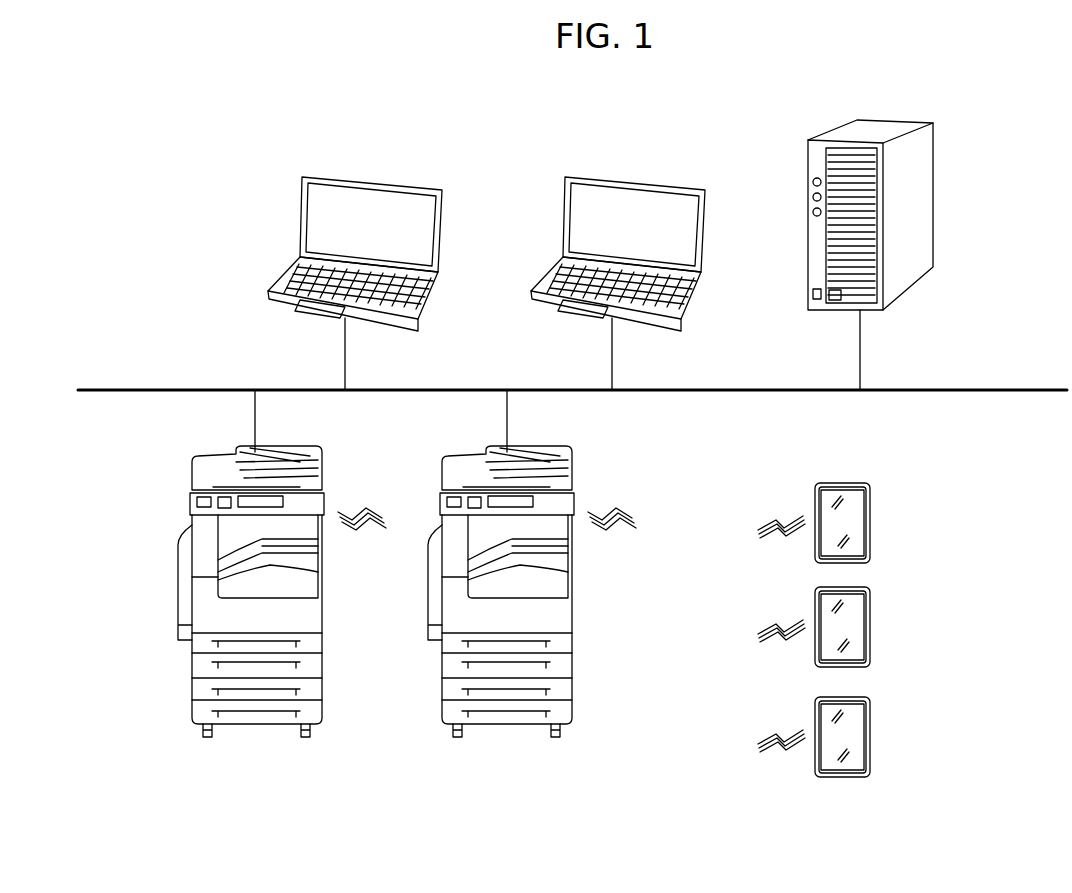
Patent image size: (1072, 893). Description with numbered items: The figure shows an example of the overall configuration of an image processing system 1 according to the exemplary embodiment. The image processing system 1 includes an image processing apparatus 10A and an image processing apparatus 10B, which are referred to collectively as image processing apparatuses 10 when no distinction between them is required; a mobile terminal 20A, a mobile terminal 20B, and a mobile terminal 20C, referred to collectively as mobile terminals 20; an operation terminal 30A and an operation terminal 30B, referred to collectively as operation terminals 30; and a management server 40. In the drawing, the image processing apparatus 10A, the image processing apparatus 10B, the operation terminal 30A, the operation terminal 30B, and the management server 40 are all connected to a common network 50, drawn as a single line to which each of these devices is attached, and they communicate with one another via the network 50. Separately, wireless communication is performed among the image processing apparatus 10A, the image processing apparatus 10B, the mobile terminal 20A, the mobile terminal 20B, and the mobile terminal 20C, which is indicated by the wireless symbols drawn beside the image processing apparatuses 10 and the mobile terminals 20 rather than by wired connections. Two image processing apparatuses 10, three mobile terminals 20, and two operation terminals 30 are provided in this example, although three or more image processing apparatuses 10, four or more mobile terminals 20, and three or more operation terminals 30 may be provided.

The image processing system 1 is at (176, 112).
The image processing apparatuses 10 is at (507, 784).
The image processing apparatus 10A is at (283, 725).
The image processing apparatus 10B is at (476, 725).
The mobile terminals 20 is at (968, 508).
The mobile terminal 20A is at (870, 523).
The mobile terminal 20B is at (870, 630).
The mobile terminal 20C is at (870, 740).
The operation terminals 30 is at (620, 121).
The operation terminal 30A is at (405, 178).
The operation terminal 30B is at (603, 179).
The management server 40 is at (933, 186).
The network 50 is at (1017, 389).